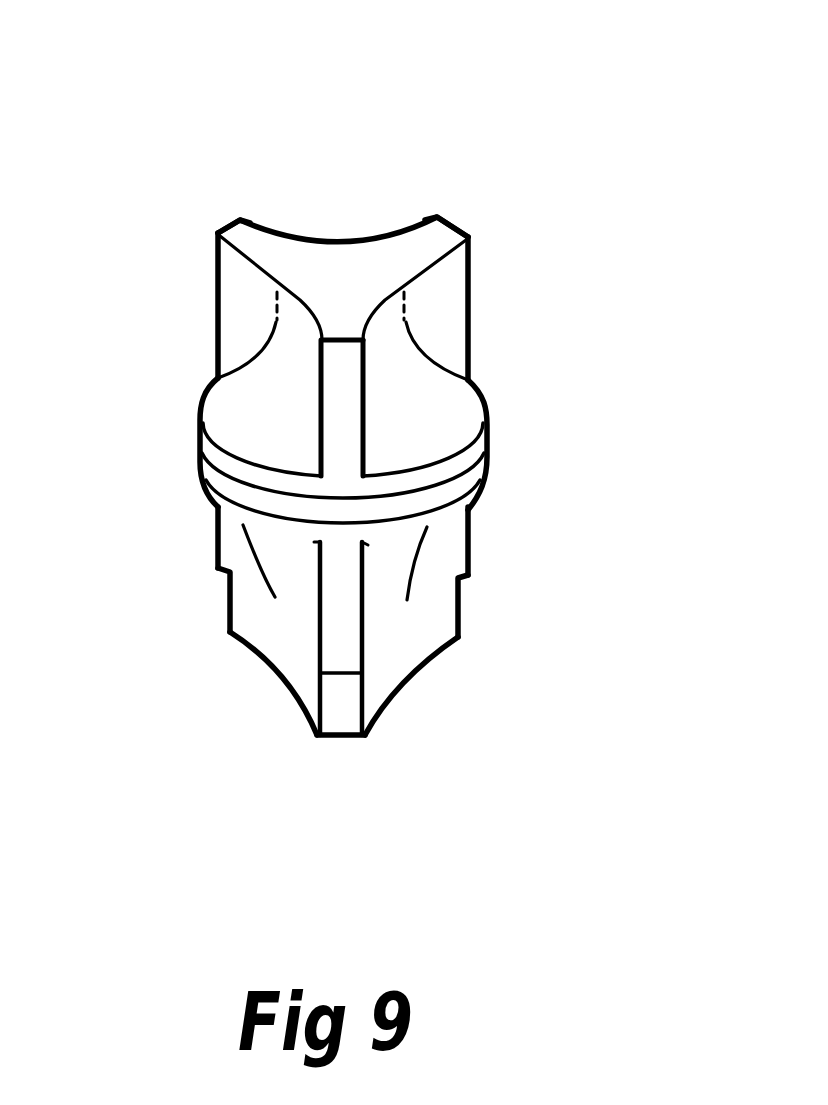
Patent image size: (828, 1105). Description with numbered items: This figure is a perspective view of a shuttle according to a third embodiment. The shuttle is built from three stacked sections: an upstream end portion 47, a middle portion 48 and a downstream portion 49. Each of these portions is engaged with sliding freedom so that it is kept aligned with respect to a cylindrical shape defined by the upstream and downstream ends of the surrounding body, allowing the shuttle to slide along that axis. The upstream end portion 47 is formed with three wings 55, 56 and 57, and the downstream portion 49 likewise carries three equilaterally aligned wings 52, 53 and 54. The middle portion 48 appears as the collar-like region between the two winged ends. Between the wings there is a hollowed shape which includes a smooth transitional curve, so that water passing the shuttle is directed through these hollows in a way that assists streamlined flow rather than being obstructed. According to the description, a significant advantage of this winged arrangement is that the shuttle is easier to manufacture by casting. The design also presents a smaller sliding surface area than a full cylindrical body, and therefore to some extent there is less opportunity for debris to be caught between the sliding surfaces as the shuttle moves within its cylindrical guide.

The upstream end portion 47 is at (457, 323).
The middle portion 48 is at (470, 463).
The downstream portion 49 is at (430, 577).
The wing 52 is at (350, 717).
The wing 53 is at (243, 622).
The wing 54 is at (427, 620).
The wing 55 is at (237, 222).
The wing 56 is at (450, 223).
The wing 57 is at (342, 408).